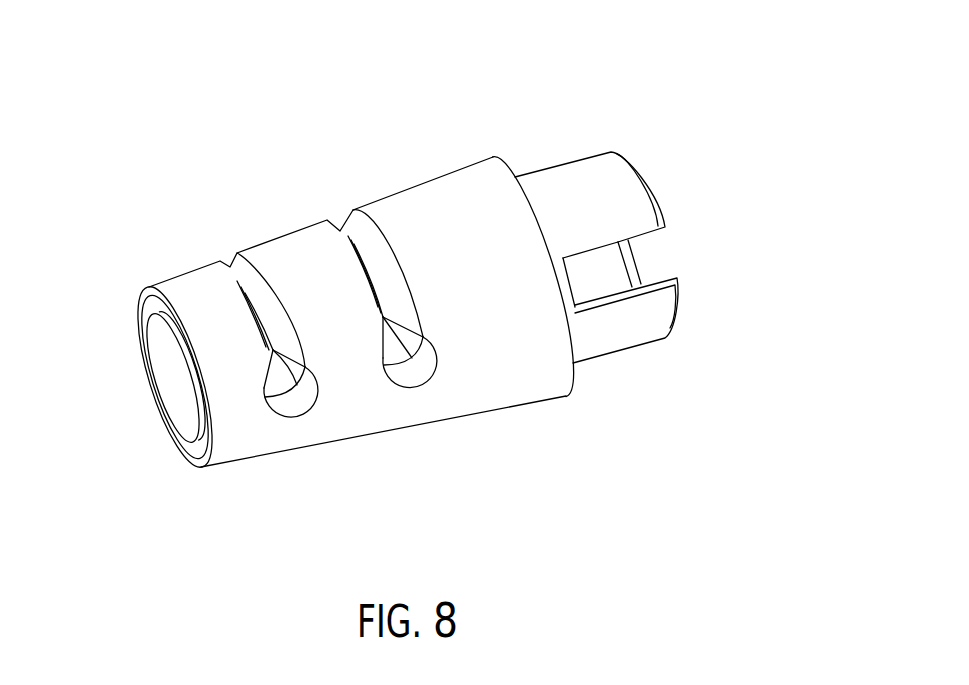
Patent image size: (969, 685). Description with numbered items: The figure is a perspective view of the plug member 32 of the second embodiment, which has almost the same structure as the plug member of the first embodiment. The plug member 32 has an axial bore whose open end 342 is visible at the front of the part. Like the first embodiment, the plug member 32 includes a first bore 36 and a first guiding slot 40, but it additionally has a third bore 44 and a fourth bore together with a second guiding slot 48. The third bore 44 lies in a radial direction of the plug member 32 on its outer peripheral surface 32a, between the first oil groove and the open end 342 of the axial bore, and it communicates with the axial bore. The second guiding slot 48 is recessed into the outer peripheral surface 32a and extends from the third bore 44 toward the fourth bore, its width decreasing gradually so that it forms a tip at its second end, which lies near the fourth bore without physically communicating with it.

The plug member 32 is at (368, 280).
The outer peripheral surface 32a is at (475, 187).
The first guiding slot 40 is at (434, 300).
The second guiding slot 48 is at (322, 320).
The third bore 44 is at (295, 400).
The first bore 36 is at (410, 373).
The open end 342 is at (165, 387).